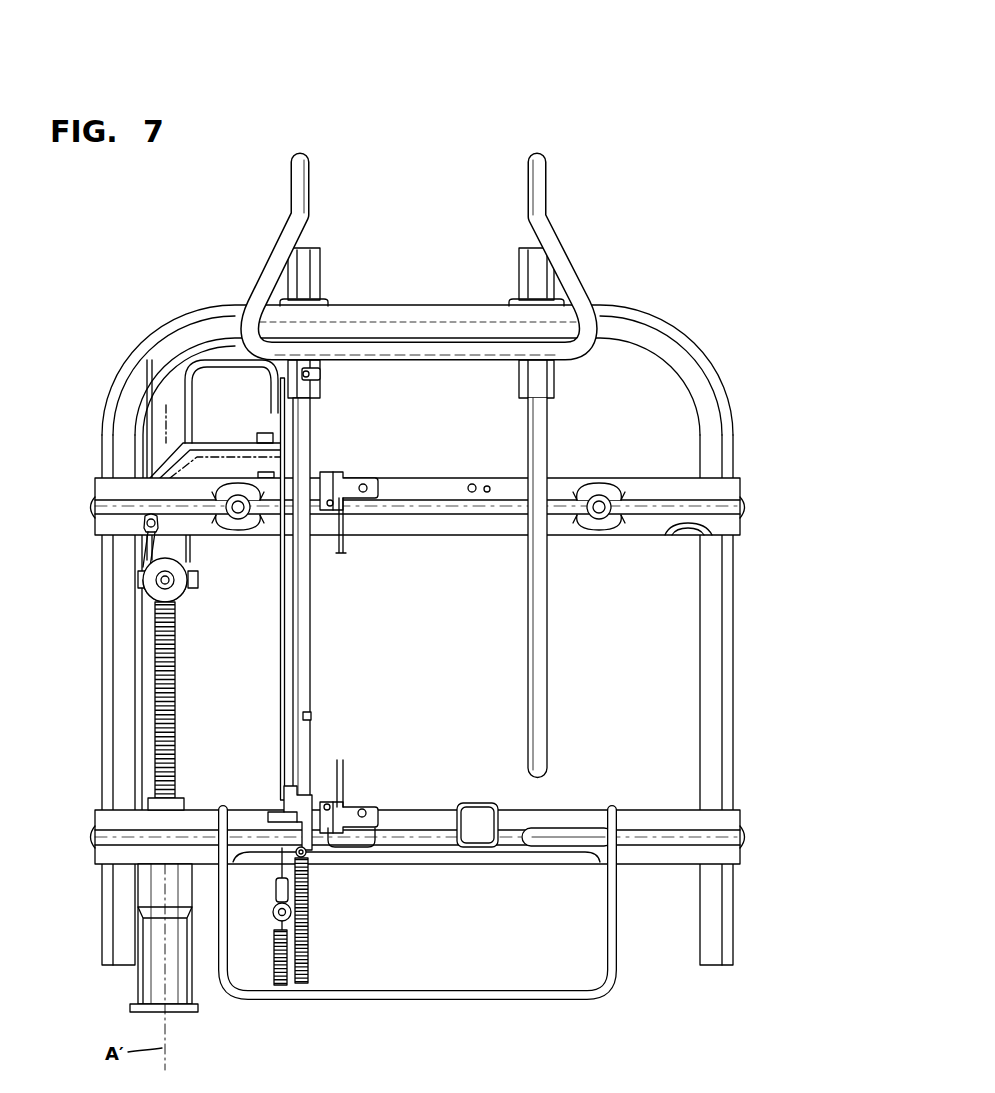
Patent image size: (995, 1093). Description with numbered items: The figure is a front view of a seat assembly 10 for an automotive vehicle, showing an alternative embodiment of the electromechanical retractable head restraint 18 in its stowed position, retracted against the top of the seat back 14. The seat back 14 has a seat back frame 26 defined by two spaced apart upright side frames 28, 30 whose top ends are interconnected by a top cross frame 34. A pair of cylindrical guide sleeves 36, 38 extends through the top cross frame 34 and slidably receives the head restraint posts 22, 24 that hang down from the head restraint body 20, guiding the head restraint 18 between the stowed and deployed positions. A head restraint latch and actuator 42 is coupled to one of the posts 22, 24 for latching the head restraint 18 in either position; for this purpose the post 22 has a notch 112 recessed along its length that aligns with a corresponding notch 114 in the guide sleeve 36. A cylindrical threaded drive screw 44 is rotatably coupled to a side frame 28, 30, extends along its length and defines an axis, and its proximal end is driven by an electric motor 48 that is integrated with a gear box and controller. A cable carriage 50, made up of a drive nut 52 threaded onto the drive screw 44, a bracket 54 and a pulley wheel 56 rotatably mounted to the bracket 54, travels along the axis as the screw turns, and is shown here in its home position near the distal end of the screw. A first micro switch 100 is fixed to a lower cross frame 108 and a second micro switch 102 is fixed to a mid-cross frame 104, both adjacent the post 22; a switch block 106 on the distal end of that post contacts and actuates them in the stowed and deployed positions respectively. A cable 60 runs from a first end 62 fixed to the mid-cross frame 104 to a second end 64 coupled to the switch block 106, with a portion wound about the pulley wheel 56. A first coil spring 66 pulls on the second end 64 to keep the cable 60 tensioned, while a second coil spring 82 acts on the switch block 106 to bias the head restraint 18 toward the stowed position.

The seat assembly 10 is at (603, 95).
The seat back 14 is at (724, 382).
The electromechanical retractable head restraint assembly 18 is at (550, 176).
The head restraint body 20 is at (453, 347).
The head restraint post 22 is at (313, 665).
The head restraint post 24 is at (547, 648).
The seat back frame 26 is at (107, 402).
The upright side frame 28 is at (105, 712).
The upright side frame 30 is at (733, 728).
The top cross frame 34 is at (386, 315).
The guide sleeve 36 is at (312, 262).
The guide sleeve 38 is at (524, 262).
The head restraint latch and actuator 42 is at (225, 445).
The threaded drive screw 44 is at (176, 672).
The electric motor 48 is at (148, 985).
The cable carriage 50 is at (140, 578).
The drive nut 52 is at (192, 580).
The bracket 54 is at (190, 572).
The pulley wheel 56 is at (182, 600).
The cable 60 is at (282, 712).
The first end 62 is at (148, 522).
The second end 64 is at (278, 918).
The first coil spring 66 is at (278, 955).
The second coil spring 82 is at (310, 925).
The first micro switch 100 is at (352, 817).
The second micro switch 102 is at (342, 483).
The mid-cross frame 104 is at (433, 522).
The switch block 106 is at (283, 808).
The lower cross frame 108 is at (563, 820).
The notch 112 is at (310, 716).
The notch 114 is at (322, 374).